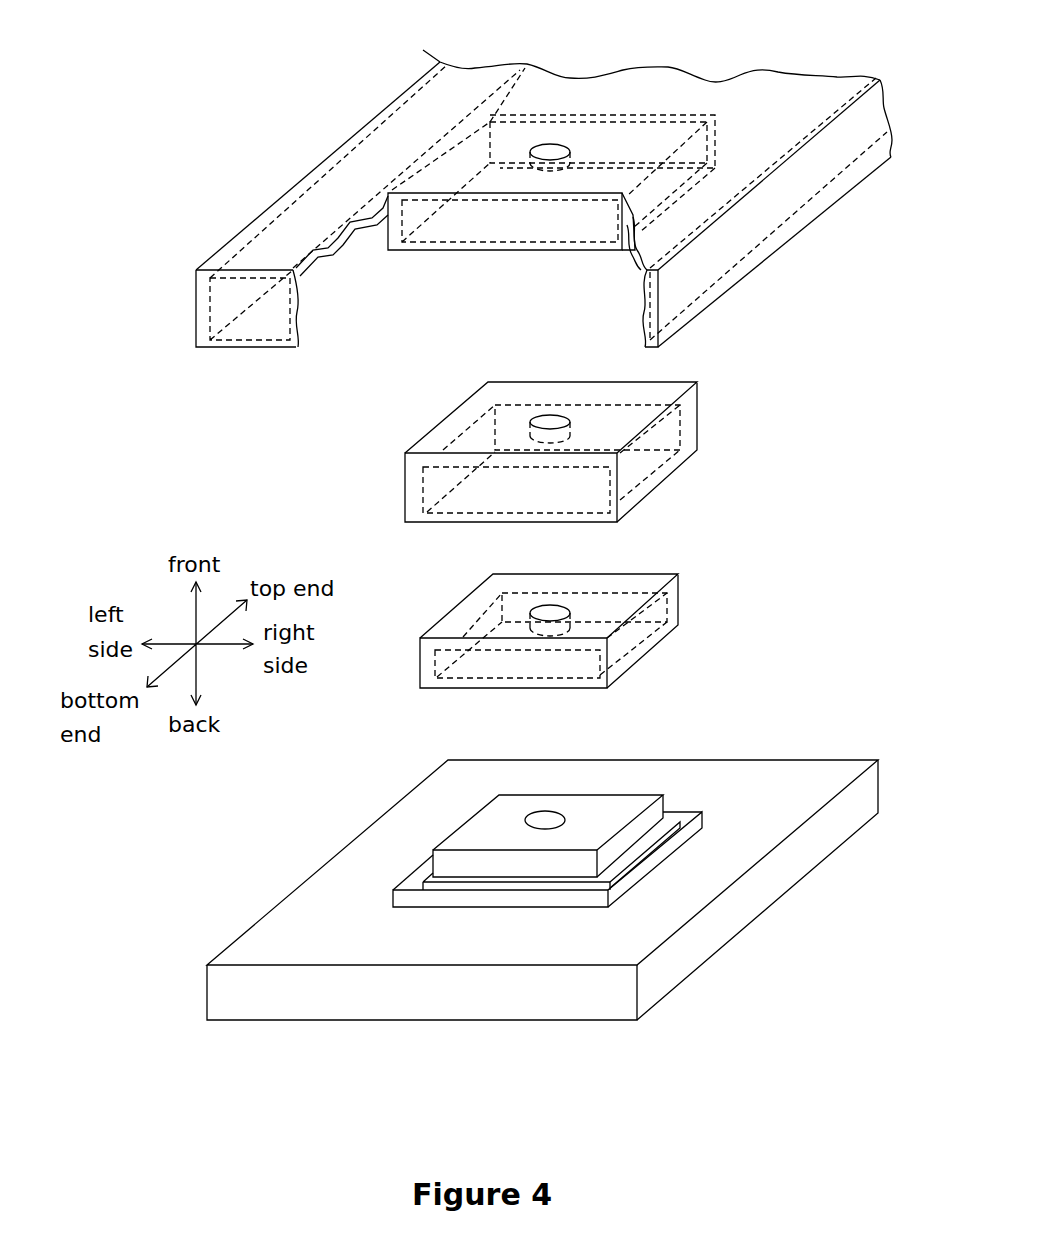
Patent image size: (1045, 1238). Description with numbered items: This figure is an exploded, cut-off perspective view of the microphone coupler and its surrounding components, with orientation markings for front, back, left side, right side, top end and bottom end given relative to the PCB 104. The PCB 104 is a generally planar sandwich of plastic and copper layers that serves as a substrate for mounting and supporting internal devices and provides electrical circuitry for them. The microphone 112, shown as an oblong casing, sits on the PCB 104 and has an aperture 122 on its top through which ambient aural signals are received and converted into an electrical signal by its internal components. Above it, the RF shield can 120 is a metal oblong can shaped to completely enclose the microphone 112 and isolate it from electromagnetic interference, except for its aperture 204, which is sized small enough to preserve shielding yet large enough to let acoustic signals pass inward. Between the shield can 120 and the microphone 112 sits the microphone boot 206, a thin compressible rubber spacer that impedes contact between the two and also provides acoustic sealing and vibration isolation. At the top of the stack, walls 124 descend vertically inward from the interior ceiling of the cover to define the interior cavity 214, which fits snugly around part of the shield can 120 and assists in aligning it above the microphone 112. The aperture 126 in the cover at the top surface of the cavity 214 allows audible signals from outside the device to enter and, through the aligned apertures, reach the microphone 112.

The PCB 104 is at (780, 868).
The microphone 112 is at (653, 810).
The RF shield can 120 is at (692, 422).
The aperture 122 is at (548, 811).
The walls 124 is at (668, 177).
The aperture 126 is at (553, 145).
The aperture 204 is at (537, 412).
The microphone boot 206 is at (678, 600).
The interior cavity 214 is at (527, 220).